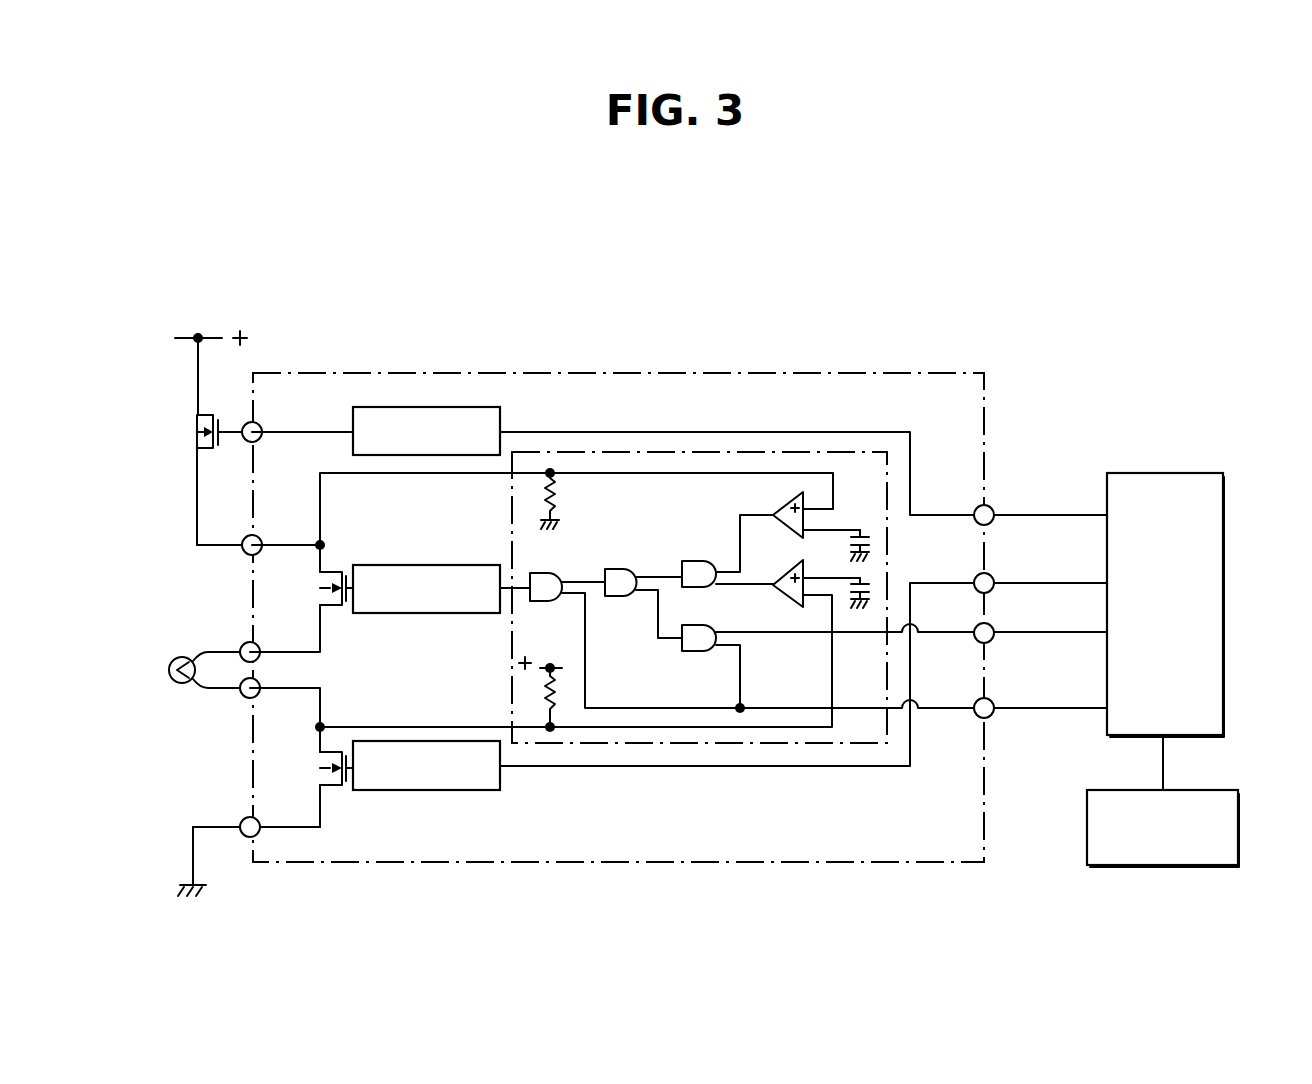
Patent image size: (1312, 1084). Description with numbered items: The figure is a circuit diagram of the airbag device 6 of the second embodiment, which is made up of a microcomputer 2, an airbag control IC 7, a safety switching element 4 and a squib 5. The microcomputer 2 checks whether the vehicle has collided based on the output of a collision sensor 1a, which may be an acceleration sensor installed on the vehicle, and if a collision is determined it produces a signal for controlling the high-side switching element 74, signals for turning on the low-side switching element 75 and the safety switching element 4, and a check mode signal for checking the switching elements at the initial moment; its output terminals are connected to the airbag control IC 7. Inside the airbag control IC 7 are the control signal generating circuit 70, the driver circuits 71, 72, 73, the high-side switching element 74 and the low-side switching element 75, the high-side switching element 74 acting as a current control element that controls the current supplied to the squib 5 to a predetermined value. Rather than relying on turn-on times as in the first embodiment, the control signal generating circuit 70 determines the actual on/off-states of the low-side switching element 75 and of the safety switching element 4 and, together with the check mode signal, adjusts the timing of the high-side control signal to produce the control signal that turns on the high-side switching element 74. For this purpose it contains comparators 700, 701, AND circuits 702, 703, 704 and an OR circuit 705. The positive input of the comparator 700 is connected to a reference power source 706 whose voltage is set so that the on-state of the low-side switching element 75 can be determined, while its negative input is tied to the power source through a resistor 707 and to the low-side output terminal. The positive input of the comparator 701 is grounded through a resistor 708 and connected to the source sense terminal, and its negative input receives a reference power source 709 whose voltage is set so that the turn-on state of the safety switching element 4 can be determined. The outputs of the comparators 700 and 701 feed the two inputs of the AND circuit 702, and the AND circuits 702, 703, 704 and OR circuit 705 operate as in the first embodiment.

The collision sensor 1a is at (1213, 790).
The microcomputer 2 is at (1160, 473).
The safety switching element 4 is at (195, 425).
The squib 5 is at (177, 659).
The airbag device 6 is at (874, 255).
The airbag control IC 7 is at (600, 372).
The control signal generating circuit 70 is at (745, 452).
The driver circuit 71 is at (437, 565).
The driver circuit 72 is at (438, 790).
The driver circuit 73 is at (445, 407).
The high-side switching element 74 is at (340, 572).
The low-side switching element 75 is at (334, 788).
The comparator 700 is at (782, 596).
The comparator 701 is at (779, 507).
The AND circuit 702 is at (700, 561).
The AND circuit 703 is at (684, 650).
The AND circuit 704 is at (545, 573).
The OR circuit 705 is at (630, 569).
The reference power source 706 is at (868, 587).
The resistor 707 is at (545, 702).
The resistor 708 is at (557, 500).
The reference power source 709 is at (865, 534).